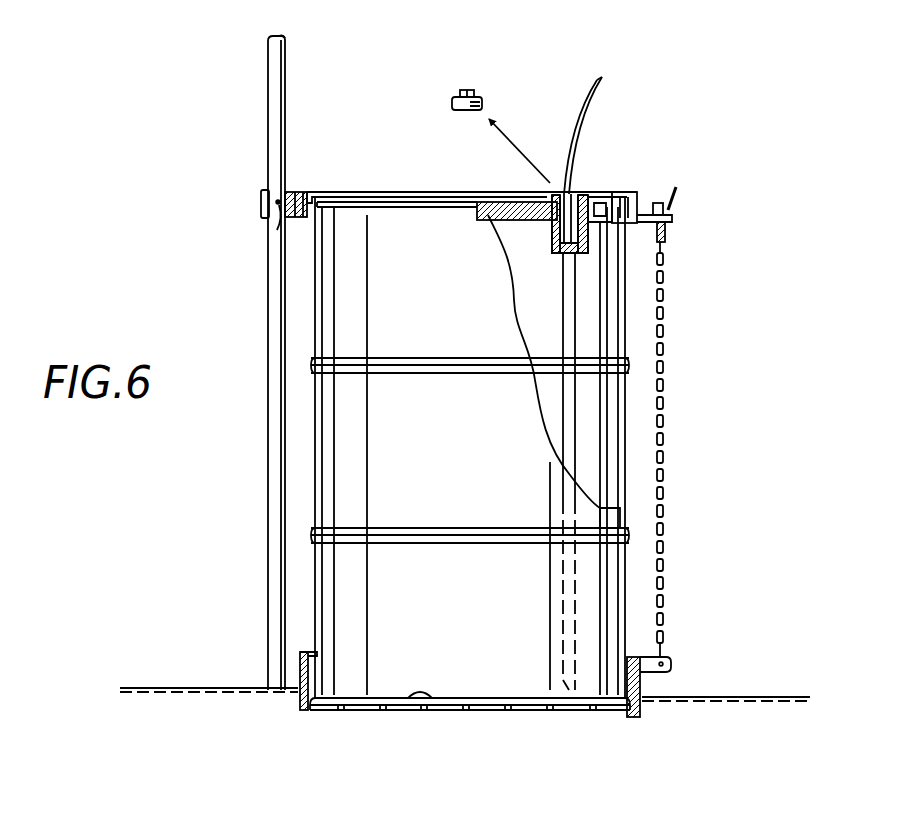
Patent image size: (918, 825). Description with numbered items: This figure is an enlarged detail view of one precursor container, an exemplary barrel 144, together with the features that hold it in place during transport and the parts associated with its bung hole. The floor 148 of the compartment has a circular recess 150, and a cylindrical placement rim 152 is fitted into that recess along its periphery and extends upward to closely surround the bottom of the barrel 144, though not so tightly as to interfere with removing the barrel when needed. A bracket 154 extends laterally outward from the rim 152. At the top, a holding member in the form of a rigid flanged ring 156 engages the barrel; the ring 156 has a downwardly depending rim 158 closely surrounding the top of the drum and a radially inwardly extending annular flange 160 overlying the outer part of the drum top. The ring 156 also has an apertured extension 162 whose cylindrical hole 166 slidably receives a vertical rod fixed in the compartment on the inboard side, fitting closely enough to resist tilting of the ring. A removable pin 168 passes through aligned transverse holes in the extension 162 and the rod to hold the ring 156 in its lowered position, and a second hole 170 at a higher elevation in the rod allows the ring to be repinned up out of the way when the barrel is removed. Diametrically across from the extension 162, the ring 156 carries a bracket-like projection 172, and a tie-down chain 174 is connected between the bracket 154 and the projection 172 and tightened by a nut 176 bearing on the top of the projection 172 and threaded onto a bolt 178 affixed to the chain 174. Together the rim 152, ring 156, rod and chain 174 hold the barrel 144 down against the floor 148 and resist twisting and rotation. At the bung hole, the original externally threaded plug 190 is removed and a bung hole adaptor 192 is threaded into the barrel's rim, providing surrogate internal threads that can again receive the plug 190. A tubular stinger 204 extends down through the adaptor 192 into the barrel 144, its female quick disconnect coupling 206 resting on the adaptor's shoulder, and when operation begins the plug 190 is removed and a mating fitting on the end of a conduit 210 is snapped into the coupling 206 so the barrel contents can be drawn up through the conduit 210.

The barrel 144 is at (498, 451).
The floor 148 is at (178, 687).
The circular recess 150 is at (432, 712).
The cylindrical placement rim 152 is at (298, 665).
The bracket 154 is at (652, 668).
The rigid flanged ring 156 is at (300, 183).
The downwardly depending rim 158 is at (640, 207).
The annular flange 160 is at (331, 191).
The apertured extension 162 is at (261, 207).
The cylindrical hole 166 is at (276, 218).
The removable pin 168 is at (277, 200).
The second hole 170 is at (277, 54).
The bracket-like projection 172 is at (641, 223).
The tie-down chain 174 is at (667, 414).
The nut 176 is at (672, 207).
The bolt 178 is at (667, 234).
The externally threaded plug 190 is at (461, 90).
The bung hole adaptor 192 is at (552, 238).
The tubular stinger 204 is at (560, 318).
The female quick disconnect coupling 206 is at (572, 238).
The conduit 210 is at (592, 86).